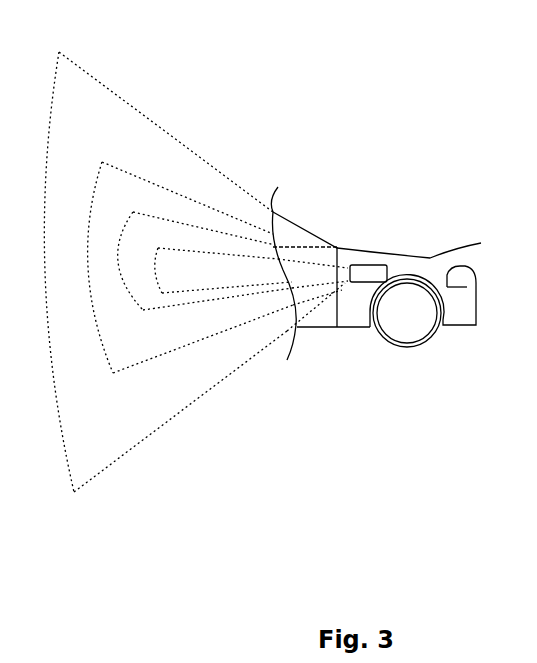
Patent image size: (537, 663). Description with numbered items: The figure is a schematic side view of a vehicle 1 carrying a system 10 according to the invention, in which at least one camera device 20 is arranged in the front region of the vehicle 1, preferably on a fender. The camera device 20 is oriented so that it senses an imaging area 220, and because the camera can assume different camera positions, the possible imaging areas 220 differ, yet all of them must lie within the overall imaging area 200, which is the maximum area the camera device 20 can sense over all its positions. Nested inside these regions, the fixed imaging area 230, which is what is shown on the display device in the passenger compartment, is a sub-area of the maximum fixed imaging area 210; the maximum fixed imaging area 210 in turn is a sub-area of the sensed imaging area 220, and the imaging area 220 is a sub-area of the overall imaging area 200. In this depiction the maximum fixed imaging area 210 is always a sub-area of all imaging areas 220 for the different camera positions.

The vehicle 1 is at (432, 257).
The system 10 is at (202, 102).
The camera device 20 is at (391, 267).
The overall imaging area 200 is at (92, 483).
The imaging area 220 is at (173, 192).
The fixed imaging area 230 is at (207, 290).
The maximum fixed imaging area 210 is at (147, 307).